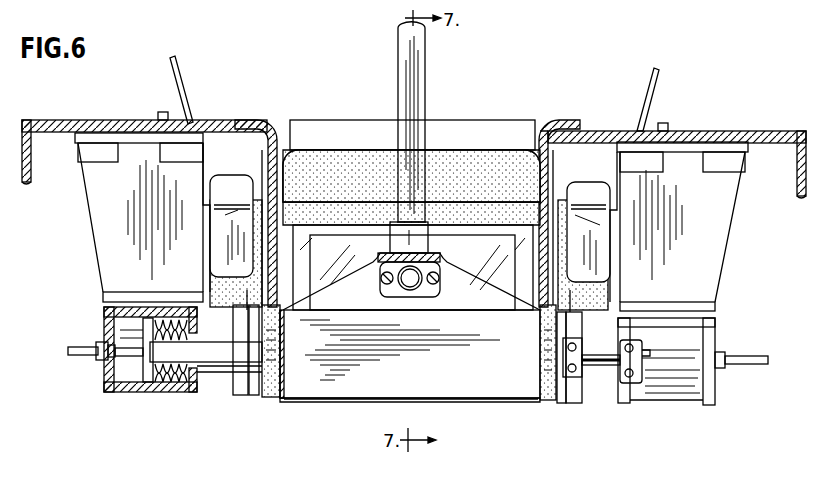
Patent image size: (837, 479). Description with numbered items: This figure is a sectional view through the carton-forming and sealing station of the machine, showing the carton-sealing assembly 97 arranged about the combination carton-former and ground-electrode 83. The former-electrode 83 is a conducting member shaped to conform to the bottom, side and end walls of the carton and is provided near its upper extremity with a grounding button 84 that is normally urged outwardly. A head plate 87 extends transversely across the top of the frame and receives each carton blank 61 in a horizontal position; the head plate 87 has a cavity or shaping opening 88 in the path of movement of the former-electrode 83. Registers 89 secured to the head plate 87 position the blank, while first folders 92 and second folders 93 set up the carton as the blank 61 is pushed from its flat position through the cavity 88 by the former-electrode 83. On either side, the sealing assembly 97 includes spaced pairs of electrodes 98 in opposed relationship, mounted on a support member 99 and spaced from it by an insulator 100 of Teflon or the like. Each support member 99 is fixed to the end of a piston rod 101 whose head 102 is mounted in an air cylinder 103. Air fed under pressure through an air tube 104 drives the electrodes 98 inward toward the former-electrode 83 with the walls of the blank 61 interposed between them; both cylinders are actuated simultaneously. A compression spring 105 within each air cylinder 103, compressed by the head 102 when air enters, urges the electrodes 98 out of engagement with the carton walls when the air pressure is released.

The carton blank 61 is at (334, 400).
The combination carton-former and ground-electrode 83 is at (364, 392).
The grounding button 84 is at (413, 284).
The head plate 87 is at (113, 122).
The cavity or shaping opening 88 is at (540, 131).
The registers 89 is at (180, 72).
The first folders 92 is at (252, 120).
The second folders 93 is at (465, 124).
The carton-sealing assembly 97 is at (259, 444).
The electrodes 98 is at (270, 398).
The support member 99 is at (237, 396).
The insulator 100 is at (252, 396).
The piston rod 101 is at (224, 344).
The head 102 is at (148, 383).
The air cylinder 103 is at (110, 392).
The air tube 104 is at (79, 358).
The compression spring 105 is at (172, 392).